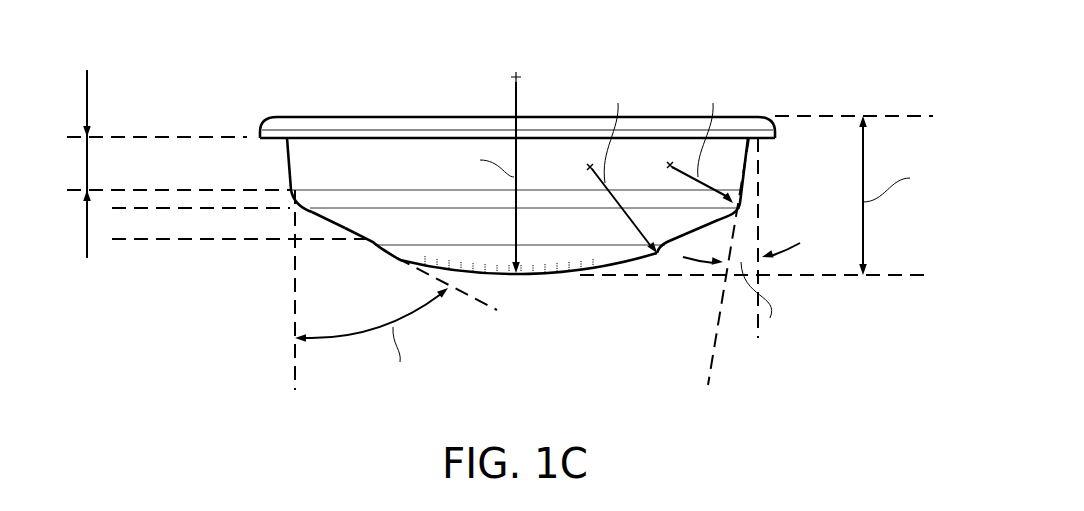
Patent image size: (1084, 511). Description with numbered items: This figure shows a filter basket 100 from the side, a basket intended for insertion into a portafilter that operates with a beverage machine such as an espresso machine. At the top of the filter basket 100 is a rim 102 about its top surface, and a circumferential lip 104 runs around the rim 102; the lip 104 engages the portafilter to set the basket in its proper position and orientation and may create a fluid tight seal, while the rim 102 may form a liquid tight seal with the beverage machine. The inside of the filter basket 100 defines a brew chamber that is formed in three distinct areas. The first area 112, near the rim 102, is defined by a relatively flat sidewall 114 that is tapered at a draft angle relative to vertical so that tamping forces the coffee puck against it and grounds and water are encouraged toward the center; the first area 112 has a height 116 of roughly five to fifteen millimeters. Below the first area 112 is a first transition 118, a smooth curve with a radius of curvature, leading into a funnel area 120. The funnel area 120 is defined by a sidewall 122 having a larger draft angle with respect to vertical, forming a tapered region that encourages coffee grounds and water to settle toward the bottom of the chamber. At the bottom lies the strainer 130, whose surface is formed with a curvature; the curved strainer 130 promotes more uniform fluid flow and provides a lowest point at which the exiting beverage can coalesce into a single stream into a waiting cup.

The filter basket 100 is at (200, 58).
The rim 102 is at (277, 130).
The circumferential lip 104 is at (265, 140).
The first area 112 is at (279, 172).
The sidewall 114 is at (746, 172).
The height 116 is at (87, 172).
The first transition 118 is at (280, 195).
The funnel area 120 is at (318, 229).
The sidewall 122 is at (342, 240).
The strainer 130 is at (538, 288).